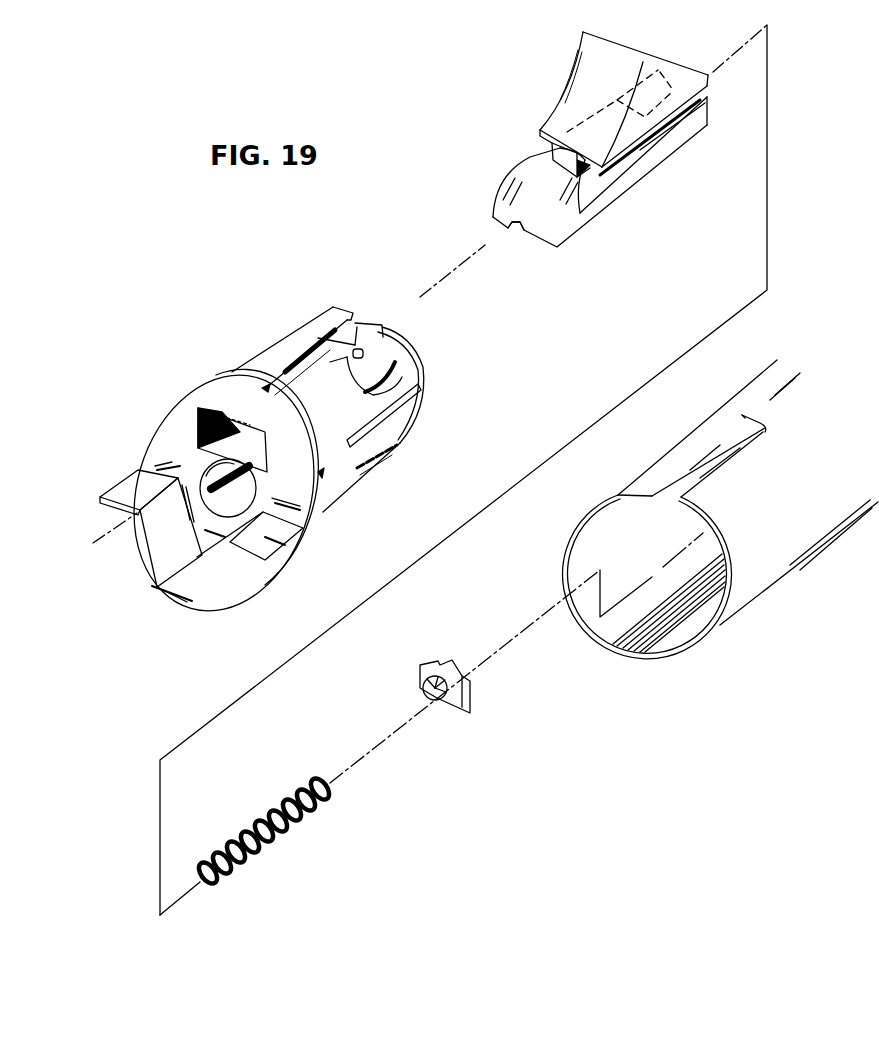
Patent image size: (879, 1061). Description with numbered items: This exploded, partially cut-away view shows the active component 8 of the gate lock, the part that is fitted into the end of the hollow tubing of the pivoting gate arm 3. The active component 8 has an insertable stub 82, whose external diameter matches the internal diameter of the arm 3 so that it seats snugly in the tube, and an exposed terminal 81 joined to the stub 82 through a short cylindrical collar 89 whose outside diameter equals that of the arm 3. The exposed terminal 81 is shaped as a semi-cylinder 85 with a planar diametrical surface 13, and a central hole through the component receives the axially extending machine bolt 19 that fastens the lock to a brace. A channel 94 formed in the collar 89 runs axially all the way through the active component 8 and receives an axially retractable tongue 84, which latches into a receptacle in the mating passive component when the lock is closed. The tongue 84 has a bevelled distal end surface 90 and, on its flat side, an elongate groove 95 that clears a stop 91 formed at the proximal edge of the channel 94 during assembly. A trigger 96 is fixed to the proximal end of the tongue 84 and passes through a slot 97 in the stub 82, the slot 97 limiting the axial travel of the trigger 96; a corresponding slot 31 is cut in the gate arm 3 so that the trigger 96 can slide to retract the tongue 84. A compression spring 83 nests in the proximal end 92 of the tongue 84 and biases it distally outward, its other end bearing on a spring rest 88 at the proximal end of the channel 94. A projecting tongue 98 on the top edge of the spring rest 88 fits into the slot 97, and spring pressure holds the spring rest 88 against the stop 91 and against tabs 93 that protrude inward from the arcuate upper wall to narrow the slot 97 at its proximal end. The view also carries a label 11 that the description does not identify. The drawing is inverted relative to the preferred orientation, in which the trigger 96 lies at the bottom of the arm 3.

The pivoting arm 3 is at (720, 509).
The slot 31 is at (723, 448).
The active component 8 is at (248, 452).
The longitudinal slot 11 is at (387, 420).
The planar diametrical surface 13 is at (265, 533).
The machine bolt 19 is at (247, 488).
The exposed terminal 81 is at (123, 473).
The insertable stub 82 is at (303, 322).
The compression spring 83 is at (307, 825).
The tongue 84 is at (600, 209).
The semi-cylinder 85 is at (217, 590).
The spring rest 88 is at (487, 667).
The cylindrical collar 89 is at (250, 393).
The bevelled distal end surface 90 is at (550, 208).
The stop 91 is at (360, 350).
The proximal end 92 is at (680, 87).
The tabs 93 is at (352, 310).
The channel 94 is at (356, 340).
The elongate groove 95 is at (523, 230).
The trigger 96 is at (596, 95).
The slot 97 is at (290, 363).
The projecting tongue 98 is at (447, 660).